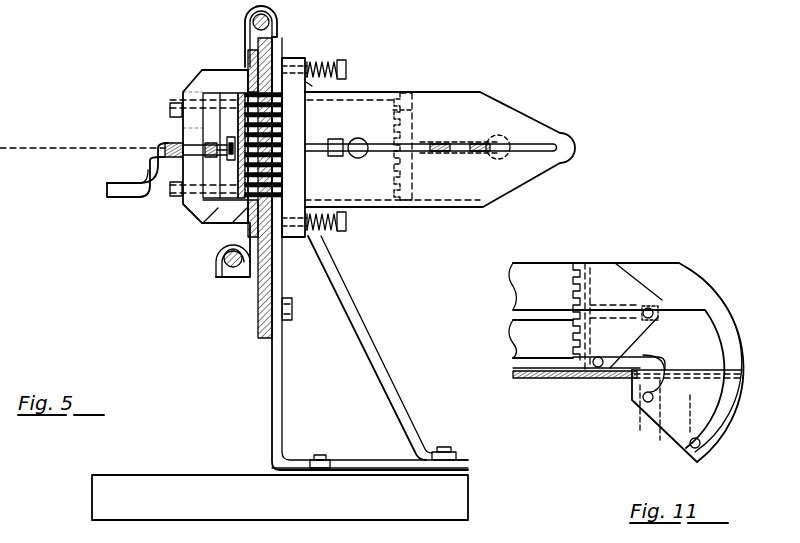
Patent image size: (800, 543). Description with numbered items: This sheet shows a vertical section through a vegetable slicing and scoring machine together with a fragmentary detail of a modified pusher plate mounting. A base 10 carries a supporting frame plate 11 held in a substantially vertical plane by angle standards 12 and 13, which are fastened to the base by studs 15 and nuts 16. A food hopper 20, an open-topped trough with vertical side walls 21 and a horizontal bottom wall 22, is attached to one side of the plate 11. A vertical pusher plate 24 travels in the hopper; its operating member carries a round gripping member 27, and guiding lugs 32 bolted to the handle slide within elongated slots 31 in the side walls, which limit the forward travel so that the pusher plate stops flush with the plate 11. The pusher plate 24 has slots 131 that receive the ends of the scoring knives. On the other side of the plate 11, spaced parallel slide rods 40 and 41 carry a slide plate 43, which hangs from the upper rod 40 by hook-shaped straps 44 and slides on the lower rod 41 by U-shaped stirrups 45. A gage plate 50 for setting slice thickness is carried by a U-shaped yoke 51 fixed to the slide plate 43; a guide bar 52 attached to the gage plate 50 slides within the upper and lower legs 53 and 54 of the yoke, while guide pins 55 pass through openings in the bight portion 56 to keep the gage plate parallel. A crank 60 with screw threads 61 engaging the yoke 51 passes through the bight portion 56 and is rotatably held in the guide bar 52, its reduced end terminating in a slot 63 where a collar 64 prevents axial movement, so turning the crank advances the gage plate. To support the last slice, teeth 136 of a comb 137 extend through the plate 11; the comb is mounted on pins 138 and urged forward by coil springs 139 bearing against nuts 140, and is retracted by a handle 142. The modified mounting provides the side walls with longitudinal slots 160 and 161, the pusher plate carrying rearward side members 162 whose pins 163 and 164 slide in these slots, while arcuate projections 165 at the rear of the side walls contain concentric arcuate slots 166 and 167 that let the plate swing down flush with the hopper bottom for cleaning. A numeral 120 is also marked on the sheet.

In FIG. 5, the base 10 is at (142, 482).
In FIG. 5, the supporting frame plate 11 is at (262, 318).
In FIG. 5, the angle standard 12 is at (272, 400).
In FIG. 5, the angle standard 13 is at (388, 400).
In FIG. 5, the stud 15 is at (442, 447).
In FIG. 5, the nut 16 is at (458, 458).
In FIG. 5, the food hopper 20 is at (440, 117).
In FIG. 5, the side wall 21 is at (391, 63).
In FIG. 5, the bottom wall 22 is at (392, 221).
In FIG. 5, the pusher plate 24 is at (427, 146).
In FIG. 5, the gripping member 27 is at (500, 136).
In FIG. 5, the elongated slot 31 is at (538, 145).
In FIG. 5, the guiding lug 32 is at (466, 154).
In FIG. 5, the upper slide rod 40 is at (246, 20).
In FIG. 5, the lower slide rod 41 is at (238, 268).
In FIG. 5, the slide plate 43 is at (250, 60).
In FIG. 5, the hook-shaped strap 44 is at (279, 20).
In FIG. 5, the stirrup 45 is at (217, 270).
In FIG. 5, the gage plate 50 is at (228, 190).
In FIG. 5, the yoke member 51 is at (196, 85).
In FIG. 5, the guide bar 52 is at (205, 200).
In FIG. 5, the upper leg 53 is at (214, 73).
In FIG. 5, the lower leg 54 is at (226, 216).
In FIG. 5, the guide pin 55 is at (172, 108).
In FIG. 5, the bight portion 56 is at (186, 128).
In FIG. 5, the crank 60 is at (107, 190).
In FIG. 5, the screw threads 61 is at (165, 146).
In FIG. 5, the slot 63 is at (228, 140).
In FIG. 5, the collar 64 is at (226, 154).
In FIG. 5, the base plate 120 is at (209, 540).
In FIG. 5, the slot 131 is at (405, 116).
In FIG. 5, the tooth 136 is at (280, 112).
In FIG. 5, the comb 137 is at (300, 120).
In FIG. 5, the pin 138 is at (336, 62).
In FIG. 5, the coil spring 139 is at (318, 70).
In FIG. 5, the nut 140 is at (348, 68).
In FIG. 5, the handle 142 is at (366, 152).
In FIG. 11, the longitudinal slot 160 is at (515, 323).
In FIG. 11, the longitudinal slot 161 is at (542, 374).
In FIG. 11, the side member 162 is at (634, 270).
In FIG. 11, the pin 163 is at (650, 307).
In FIG. 11, the pin 164 is at (600, 368).
In FIG. 11, the arcuate projection 165 is at (712, 446).
In FIG. 11, the arcuate slot 166 is at (712, 328).
In FIG. 11, the arcuate slot 167 is at (645, 400).